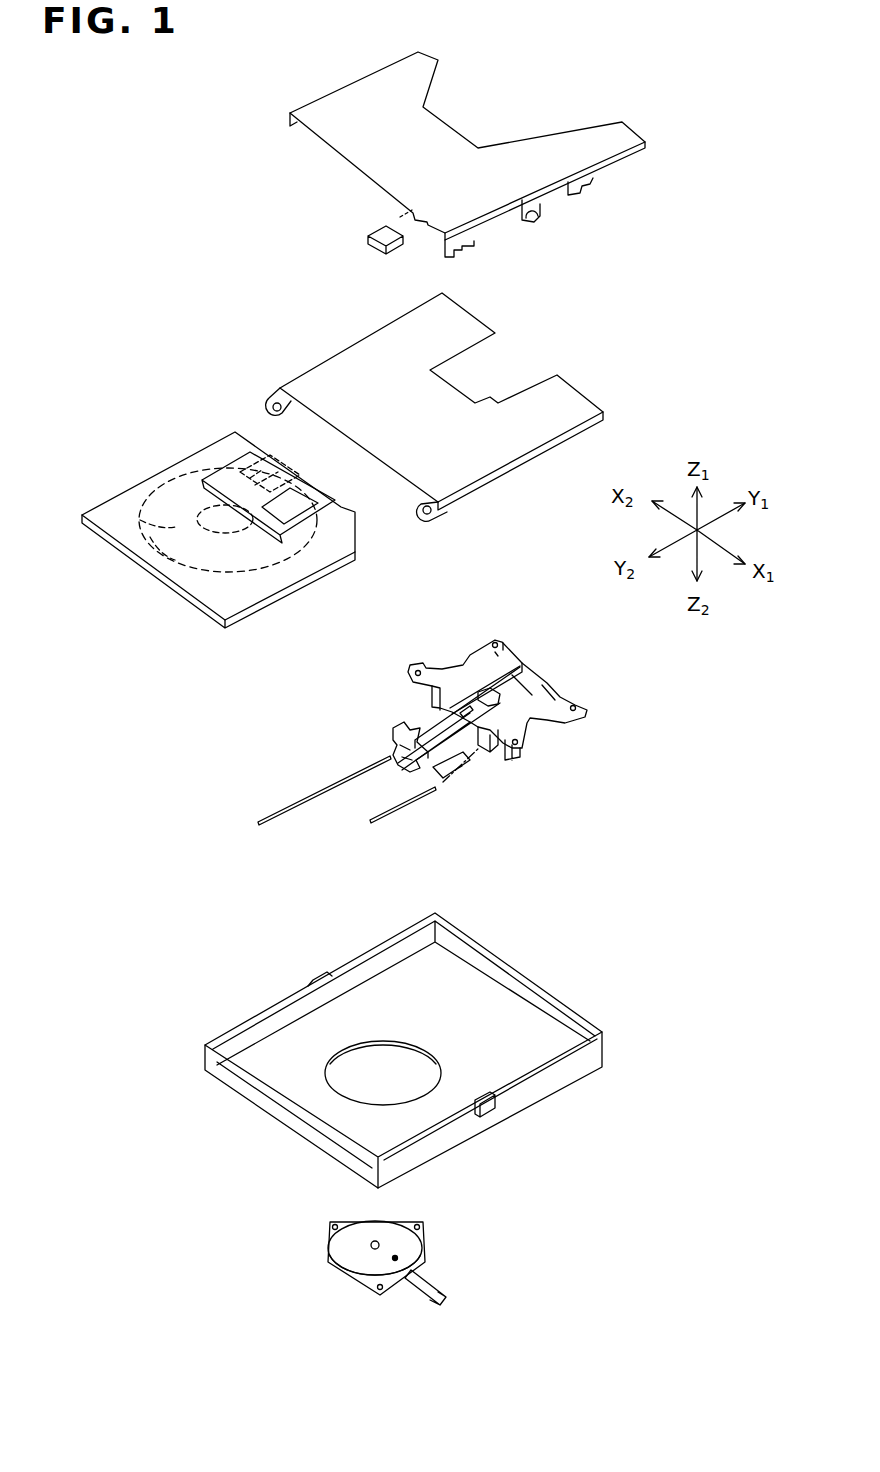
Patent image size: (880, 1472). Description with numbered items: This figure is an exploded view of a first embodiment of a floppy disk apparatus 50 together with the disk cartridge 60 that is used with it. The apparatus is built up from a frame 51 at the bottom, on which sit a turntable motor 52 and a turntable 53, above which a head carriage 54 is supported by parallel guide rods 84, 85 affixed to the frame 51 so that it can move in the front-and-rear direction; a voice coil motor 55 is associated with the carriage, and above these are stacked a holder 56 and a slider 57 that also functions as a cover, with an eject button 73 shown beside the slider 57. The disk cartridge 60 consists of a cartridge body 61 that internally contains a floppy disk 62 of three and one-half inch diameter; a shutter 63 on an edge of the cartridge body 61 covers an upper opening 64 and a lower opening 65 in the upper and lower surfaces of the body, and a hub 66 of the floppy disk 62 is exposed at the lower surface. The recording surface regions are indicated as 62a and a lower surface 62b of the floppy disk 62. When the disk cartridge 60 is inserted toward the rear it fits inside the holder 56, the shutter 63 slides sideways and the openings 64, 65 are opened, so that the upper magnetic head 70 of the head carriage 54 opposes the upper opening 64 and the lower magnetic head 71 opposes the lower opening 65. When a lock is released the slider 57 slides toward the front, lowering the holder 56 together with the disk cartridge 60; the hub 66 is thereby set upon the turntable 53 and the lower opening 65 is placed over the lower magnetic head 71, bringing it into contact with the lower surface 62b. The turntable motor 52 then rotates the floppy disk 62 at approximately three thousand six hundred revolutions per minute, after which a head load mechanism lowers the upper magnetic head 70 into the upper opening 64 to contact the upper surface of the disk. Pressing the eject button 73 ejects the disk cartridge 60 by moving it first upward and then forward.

The floppy disk apparatus 50 is at (677, 52).
The slider 57 is at (328, 93).
The eject button 73 is at (365, 238).
The holder 56 is at (317, 360).
The disk cartridge 60 is at (212, 524).
The cartridge body 61 is at (247, 613).
The floppy disk 62 is at (177, 478).
The disk recording area 62a is at (167, 528).
The lower surface 62b is at (165, 556).
The hub 66 is at (212, 515).
The shutter 63 is at (320, 507).
The upper opening 64 is at (225, 447).
The lower opening 65 is at (273, 457).
The voice coil motor 55 is at (523, 645).
The head carriage 54 is at (398, 747).
The upper magnetic head 70 is at (397, 753).
The lower magnetic head 71 is at (397, 767).
The guide rod 85 is at (290, 802).
The guide rod 84 is at (418, 797).
The frame 51 is at (560, 992).
The turntable motor 52 is at (370, 1283).
The turntable 53 is at (413, 1243).